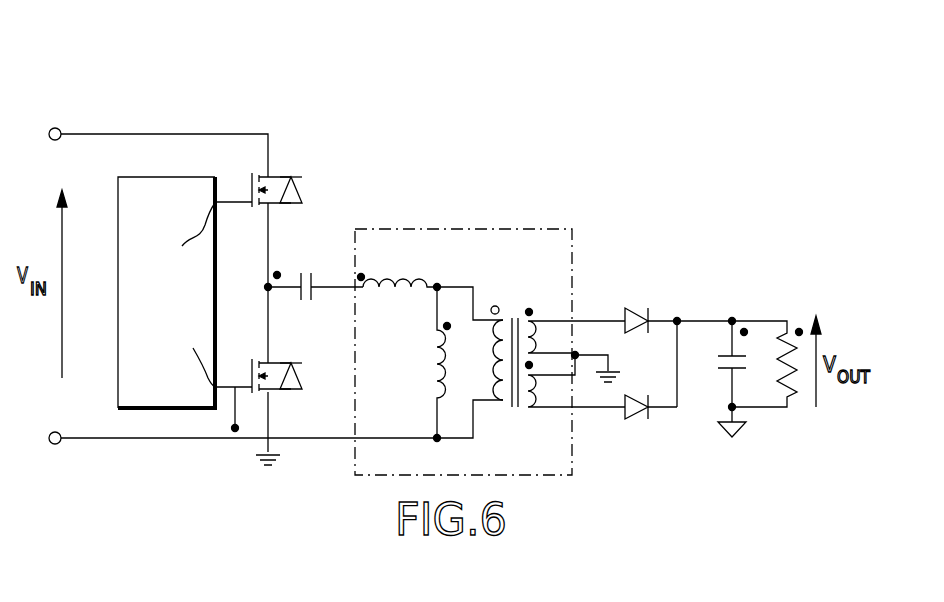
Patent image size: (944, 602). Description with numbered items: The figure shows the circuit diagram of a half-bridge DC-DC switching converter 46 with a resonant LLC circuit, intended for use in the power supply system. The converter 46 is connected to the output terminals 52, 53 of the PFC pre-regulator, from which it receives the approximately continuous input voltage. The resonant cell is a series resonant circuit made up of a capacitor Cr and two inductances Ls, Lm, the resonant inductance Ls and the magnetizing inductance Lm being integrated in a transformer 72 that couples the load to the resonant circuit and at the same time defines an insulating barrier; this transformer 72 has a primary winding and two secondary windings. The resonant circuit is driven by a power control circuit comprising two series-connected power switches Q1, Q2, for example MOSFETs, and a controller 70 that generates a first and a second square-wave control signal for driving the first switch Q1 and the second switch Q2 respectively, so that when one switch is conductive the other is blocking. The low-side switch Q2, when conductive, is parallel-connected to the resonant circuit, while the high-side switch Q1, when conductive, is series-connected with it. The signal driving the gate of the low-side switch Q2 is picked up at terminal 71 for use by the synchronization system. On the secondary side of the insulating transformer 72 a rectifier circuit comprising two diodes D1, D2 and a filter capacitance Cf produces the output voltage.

The DC-DC switching converter 46 is at (568, 110).
The output terminal 52 is at (56, 128).
The output terminal 53 is at (58, 432).
The controller 70 is at (163, 177).
The terminal 71 is at (235, 428).
The transformer 72 is at (502, 229).
The high-side switch Q1 is at (309, 187).
The low-side switch Q2 is at (283, 349).
The capacitor Cr is at (307, 271).
The resonant inductance Ls is at (391, 274).
The magnetizing inductance Lm is at (427, 366).
The diode D1 is at (631, 307).
The diode D2 is at (640, 419).
The filter capacitance Cf is at (723, 367).